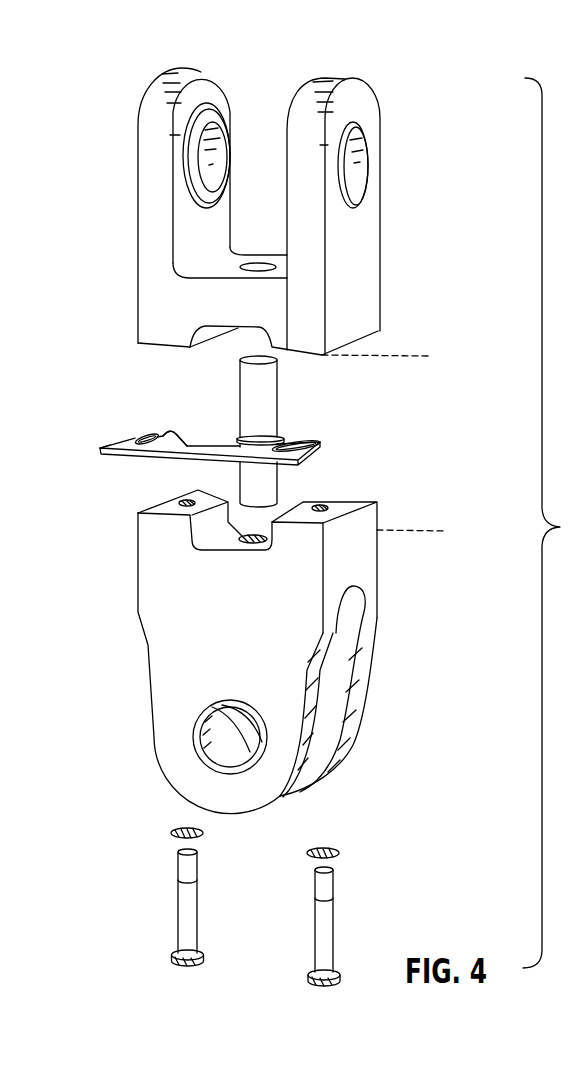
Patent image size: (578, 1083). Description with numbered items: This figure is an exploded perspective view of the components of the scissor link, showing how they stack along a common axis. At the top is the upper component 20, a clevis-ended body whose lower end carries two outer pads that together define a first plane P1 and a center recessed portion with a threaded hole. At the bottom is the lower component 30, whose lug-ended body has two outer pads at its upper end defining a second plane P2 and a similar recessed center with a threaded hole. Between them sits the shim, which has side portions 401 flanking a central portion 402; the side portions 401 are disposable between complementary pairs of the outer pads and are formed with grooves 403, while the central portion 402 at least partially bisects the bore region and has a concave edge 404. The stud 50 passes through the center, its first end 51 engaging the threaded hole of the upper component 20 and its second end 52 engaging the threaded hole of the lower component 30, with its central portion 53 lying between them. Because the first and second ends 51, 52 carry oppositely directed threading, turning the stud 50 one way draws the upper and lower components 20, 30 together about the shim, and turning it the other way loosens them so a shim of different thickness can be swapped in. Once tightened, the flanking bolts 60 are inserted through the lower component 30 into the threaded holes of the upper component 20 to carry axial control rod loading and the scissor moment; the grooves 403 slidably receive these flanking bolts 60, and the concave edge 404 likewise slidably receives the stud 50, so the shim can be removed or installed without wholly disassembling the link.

The upper component 20 is at (138, 218).
The lower component 30 is at (153, 618).
The stud 50 is at (254, 428).
The first end 51 is at (270, 372).
The second end 52 is at (267, 497).
The central portion 53 is at (258, 435).
The side portions 401 is at (352, 450).
The central portion 402 is at (206, 435).
The grooves 403 is at (141, 436).
The concave edge 404 is at (192, 445).
The flanking bolts 60 is at (188, 912).
The first plane P1 is at (413, 356).
The second plane P2 is at (413, 533).